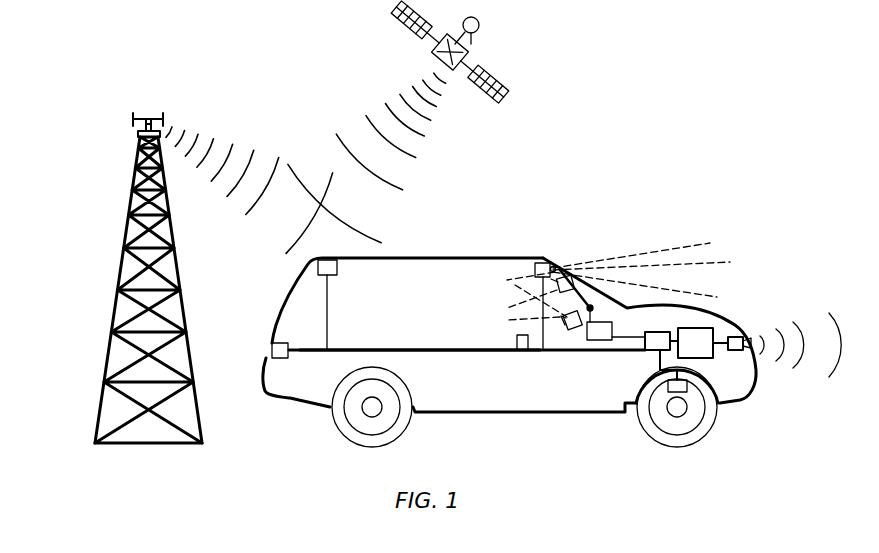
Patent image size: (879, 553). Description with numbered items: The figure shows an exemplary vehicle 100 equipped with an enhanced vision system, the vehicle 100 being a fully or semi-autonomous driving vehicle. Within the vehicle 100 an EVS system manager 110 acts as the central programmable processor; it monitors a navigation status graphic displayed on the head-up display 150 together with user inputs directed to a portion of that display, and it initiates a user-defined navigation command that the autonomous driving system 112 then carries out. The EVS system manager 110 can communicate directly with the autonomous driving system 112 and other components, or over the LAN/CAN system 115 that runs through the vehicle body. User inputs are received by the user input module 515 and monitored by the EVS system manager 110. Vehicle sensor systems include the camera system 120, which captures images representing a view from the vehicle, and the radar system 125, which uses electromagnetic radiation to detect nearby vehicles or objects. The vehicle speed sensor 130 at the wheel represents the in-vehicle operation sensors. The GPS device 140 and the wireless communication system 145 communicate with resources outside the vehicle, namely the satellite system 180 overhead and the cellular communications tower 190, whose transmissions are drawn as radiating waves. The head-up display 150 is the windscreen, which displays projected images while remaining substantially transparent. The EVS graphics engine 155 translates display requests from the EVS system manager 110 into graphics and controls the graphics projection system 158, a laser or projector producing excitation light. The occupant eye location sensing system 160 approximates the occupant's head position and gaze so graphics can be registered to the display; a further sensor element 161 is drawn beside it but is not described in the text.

The vehicle 100 is at (472, 258).
The EVS system manager 110 is at (707, 354).
The autonomous driving system 112 is at (657, 332).
The LAN/CAN system 115 is at (357, 350).
The camera system 120 is at (549, 258).
The radar system 125 is at (750, 339).
The vehicle speed sensor 130 is at (686, 390).
The GPS device 140 is at (271, 352).
The wireless communication system 145 is at (317, 267).
The head-up display 150 is at (611, 306).
The EVS graphics engine 155 is at (600, 341).
The graphics projection system 158 is at (592, 306).
The occupant eye location sensing system 160 is at (573, 331).
The lidar sensor 161 is at (573, 275).
The satellite system 180 is at (422, 61).
The cellular communications tower 190 is at (123, 252).
The user input module 515 is at (521, 350).